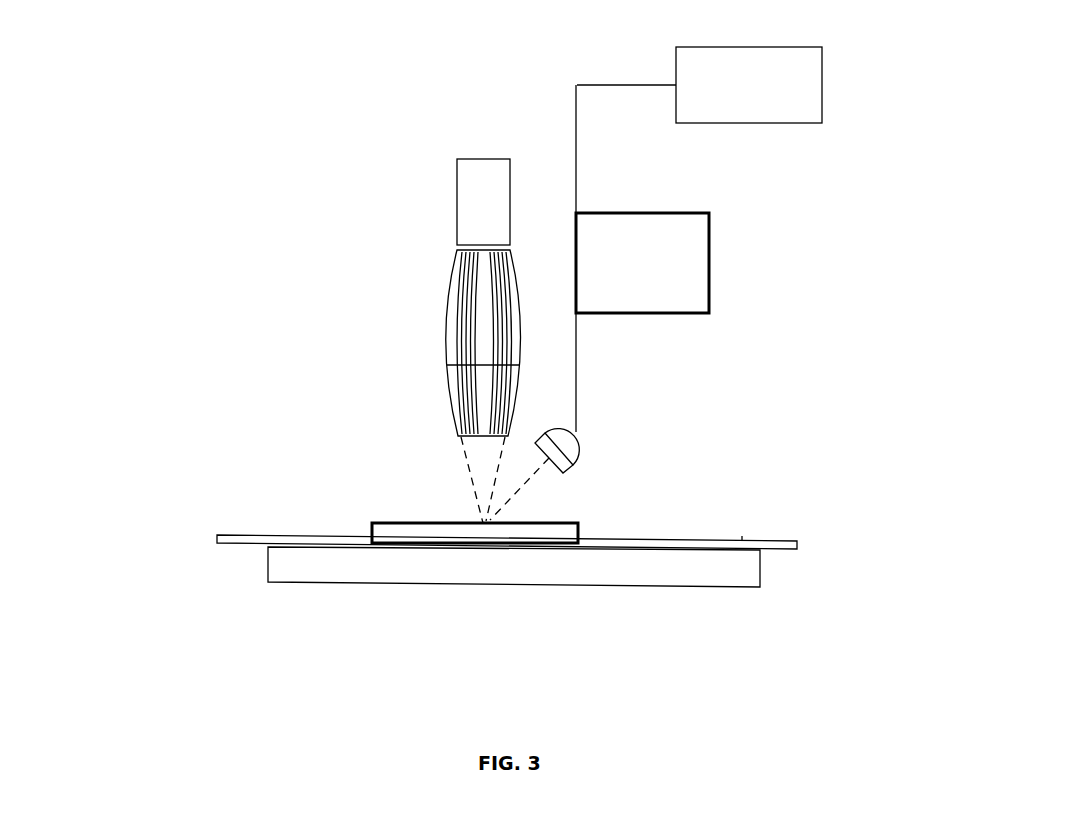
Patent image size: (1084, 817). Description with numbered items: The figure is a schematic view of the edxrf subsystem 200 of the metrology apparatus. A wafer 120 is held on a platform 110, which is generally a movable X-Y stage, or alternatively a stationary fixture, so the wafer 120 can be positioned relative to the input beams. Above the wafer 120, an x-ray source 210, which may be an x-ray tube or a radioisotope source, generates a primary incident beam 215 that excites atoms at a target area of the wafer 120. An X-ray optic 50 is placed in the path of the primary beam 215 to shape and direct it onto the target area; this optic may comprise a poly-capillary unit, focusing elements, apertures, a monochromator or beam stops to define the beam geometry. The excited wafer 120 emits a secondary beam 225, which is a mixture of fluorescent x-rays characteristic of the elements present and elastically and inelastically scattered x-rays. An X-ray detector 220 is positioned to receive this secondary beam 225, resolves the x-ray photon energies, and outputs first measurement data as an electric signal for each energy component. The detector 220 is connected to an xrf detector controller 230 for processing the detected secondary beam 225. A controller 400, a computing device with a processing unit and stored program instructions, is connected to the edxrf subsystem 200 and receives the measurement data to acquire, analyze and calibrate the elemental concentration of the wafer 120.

The edxrf subsystem 200 is at (165, 101).
The x-ray source 210 is at (457, 211).
The X-ray optic 50 is at (447, 342).
The primary incident beam 215 is at (458, 480).
The wafer 120 is at (432, 523).
The platform 110 is at (753, 568).
The X-ray detector 220 is at (577, 447).
The secondary beam 225 is at (518, 492).
The xrf detector controller 230 is at (700, 242).
The controller 400 is at (807, 80).